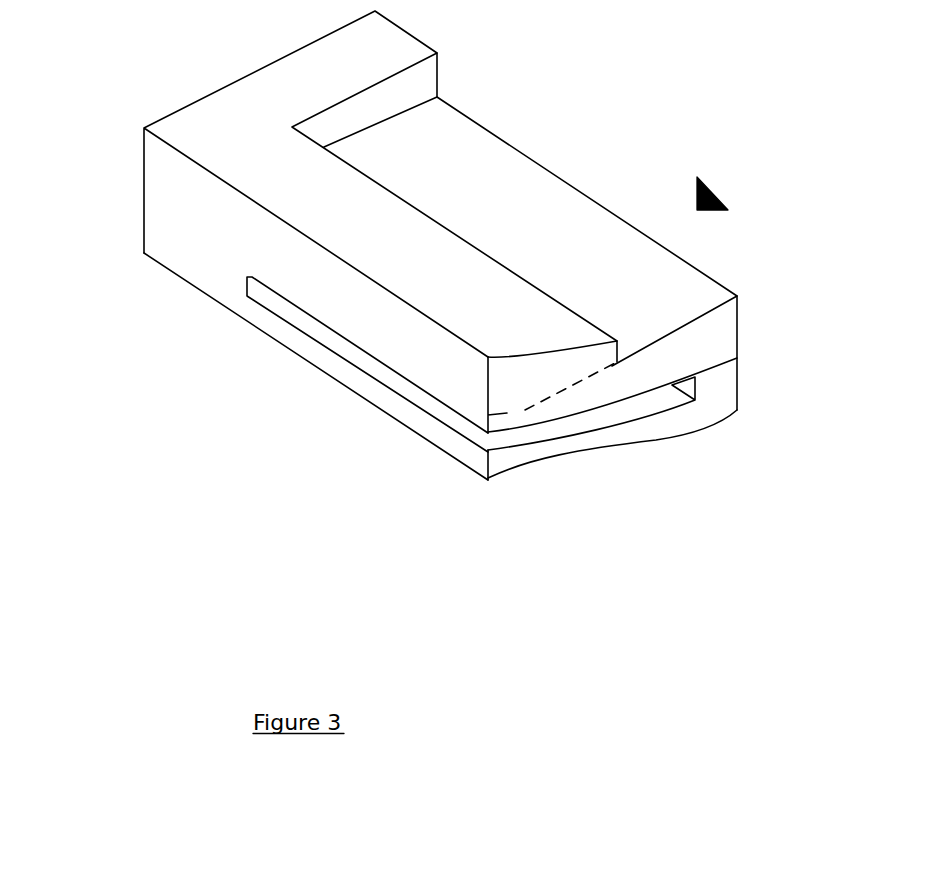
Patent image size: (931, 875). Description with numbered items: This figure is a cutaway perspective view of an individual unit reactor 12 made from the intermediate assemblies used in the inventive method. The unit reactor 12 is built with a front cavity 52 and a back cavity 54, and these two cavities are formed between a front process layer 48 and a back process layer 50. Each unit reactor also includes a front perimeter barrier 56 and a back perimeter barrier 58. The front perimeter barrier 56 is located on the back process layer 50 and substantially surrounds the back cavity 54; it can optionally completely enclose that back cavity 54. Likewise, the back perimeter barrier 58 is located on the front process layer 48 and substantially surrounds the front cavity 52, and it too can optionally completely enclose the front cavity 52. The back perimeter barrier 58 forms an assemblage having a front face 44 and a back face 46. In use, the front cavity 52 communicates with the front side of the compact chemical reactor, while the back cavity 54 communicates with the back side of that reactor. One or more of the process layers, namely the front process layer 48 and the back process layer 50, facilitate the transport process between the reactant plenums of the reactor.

The unit reactor 12 is at (713, 193).
The front face 44 is at (170, 272).
The back face 46 is at (737, 325).
The front process layer 48 is at (368, 398).
The back process layer 50 is at (641, 378).
The front cavity 52 is at (251, 308).
The back cavity 54 is at (437, 59).
The front perimeter barrier 56 is at (499, 333).
The back perimeter barrier 58 is at (717, 392).